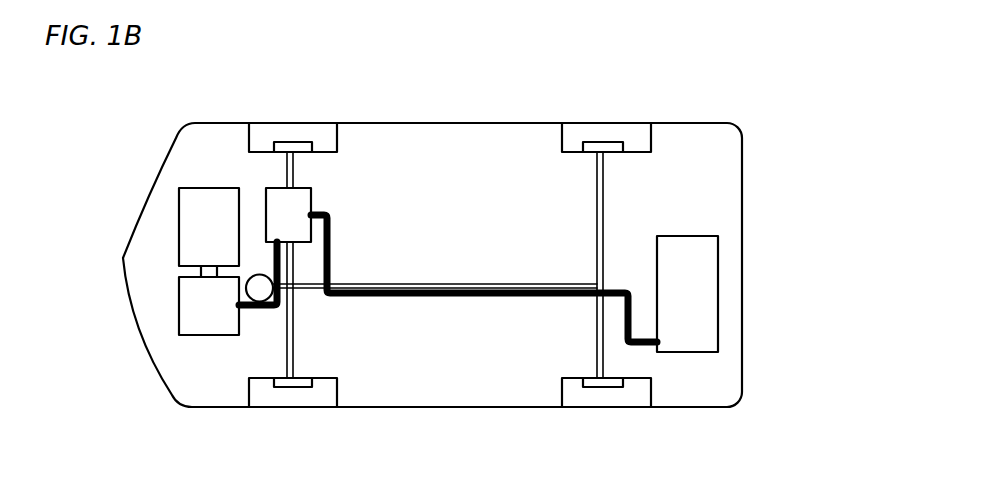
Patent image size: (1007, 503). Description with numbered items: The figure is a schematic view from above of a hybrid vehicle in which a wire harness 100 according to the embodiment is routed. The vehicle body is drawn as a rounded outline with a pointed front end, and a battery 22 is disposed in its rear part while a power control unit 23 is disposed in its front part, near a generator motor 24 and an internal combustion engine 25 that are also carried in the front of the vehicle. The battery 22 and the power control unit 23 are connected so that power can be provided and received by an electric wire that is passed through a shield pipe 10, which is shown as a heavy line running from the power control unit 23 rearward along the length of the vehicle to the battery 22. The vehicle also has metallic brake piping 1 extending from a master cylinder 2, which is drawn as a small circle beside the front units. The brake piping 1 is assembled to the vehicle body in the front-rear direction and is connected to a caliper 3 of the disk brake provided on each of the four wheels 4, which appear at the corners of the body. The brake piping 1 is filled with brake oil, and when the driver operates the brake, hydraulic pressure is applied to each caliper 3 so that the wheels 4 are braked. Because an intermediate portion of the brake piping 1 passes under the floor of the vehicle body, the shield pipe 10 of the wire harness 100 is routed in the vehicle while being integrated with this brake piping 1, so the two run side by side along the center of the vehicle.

The brake piping 1 is at (457, 283).
The master cylinder 2 is at (257, 306).
The caliper 3 is at (284, 135).
The wheel 4 is at (318, 133).
The shield pipe 10 is at (402, 297).
The battery 22 is at (710, 267).
The power control unit 23 is at (266, 190).
The generator motor 24 is at (179, 300).
The internal combustion engine 25 is at (179, 228).
The wire harness 100 is at (487, 332).